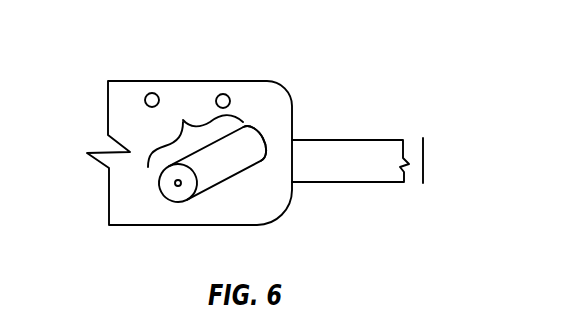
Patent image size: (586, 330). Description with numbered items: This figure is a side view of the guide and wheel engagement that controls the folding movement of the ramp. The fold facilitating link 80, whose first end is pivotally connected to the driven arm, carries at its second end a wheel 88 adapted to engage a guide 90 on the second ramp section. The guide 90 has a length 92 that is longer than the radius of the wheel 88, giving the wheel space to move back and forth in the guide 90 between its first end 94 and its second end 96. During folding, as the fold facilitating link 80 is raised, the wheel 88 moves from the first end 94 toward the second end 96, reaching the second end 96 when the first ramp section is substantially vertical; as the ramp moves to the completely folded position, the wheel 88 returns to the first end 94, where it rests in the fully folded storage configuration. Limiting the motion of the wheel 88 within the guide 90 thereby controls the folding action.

The fold facilitating link 80 is at (357, 140).
The wheel 88 is at (160, 180).
The guide 90 is at (227, 178).
The length 92 is at (183, 120).
The first end 94 is at (172, 188).
The second end 96 is at (258, 136).